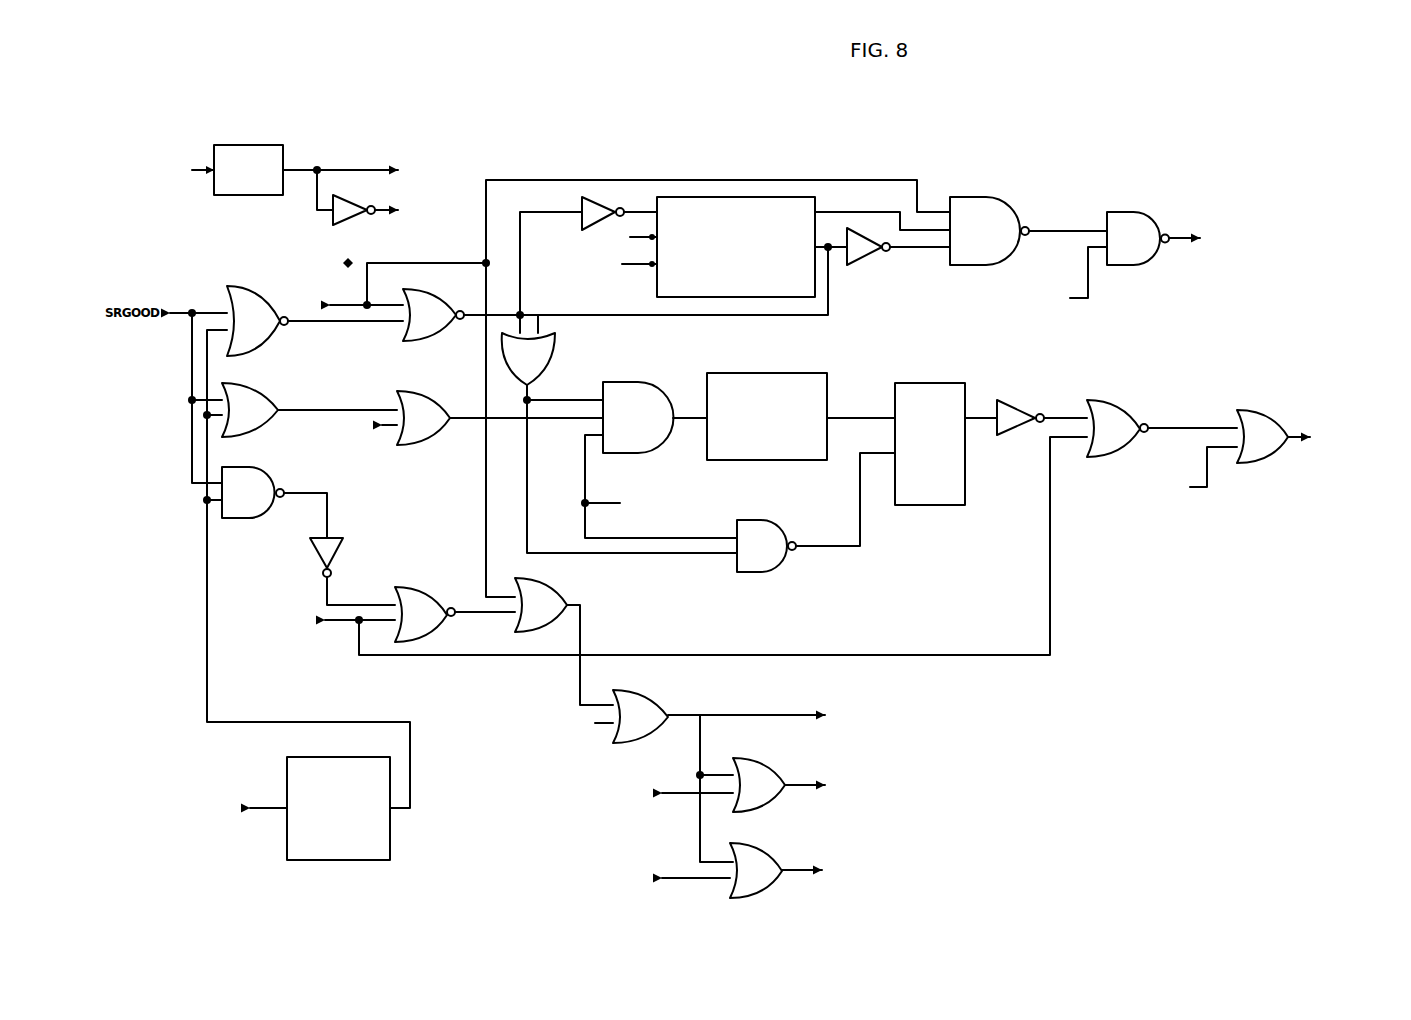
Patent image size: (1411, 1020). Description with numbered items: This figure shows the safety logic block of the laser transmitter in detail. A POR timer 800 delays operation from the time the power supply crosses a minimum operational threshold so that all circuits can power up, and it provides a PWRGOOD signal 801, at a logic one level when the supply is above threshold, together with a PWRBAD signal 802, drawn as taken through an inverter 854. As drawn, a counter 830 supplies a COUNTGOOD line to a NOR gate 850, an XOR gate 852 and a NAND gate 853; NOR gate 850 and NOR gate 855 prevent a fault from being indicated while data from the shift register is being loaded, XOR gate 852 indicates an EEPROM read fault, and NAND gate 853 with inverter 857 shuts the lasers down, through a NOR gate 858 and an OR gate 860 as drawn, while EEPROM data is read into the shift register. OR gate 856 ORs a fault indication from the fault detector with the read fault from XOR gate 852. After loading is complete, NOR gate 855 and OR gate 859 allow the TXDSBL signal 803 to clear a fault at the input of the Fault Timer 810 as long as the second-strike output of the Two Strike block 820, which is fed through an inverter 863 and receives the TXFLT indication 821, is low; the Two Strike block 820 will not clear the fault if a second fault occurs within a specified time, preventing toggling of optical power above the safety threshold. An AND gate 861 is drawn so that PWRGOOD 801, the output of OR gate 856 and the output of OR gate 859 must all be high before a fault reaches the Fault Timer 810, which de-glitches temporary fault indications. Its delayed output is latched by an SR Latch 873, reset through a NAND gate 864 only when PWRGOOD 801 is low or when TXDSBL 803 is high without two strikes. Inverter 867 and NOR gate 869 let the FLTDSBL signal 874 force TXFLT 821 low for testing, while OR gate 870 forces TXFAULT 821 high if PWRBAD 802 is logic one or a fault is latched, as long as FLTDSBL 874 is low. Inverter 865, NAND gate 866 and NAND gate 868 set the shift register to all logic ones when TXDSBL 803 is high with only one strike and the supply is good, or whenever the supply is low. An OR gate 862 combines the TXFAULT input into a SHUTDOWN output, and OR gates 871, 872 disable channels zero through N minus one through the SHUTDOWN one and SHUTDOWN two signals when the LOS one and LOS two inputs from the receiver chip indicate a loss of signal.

The POR timer 800 is at (221, 157).
The PWRGOOD signal 801 is at (384, 157).
The PWRBAD signal 802 is at (422, 199).
The TXDSBL signal 803 is at (617, 388).
The Fault Timer 810 is at (747, 373).
The Two Strike block 820 is at (745, 197).
The TXFLT signal 821 is at (659, 264).
The counter 830 is at (347, 810).
The NOR gate 850 is at (295, 306).
The XOR gate 852 is at (258, 387).
The NAND gate 853 is at (262, 467).
The inverter 854 is at (355, 225).
The NOR gate 855 is at (440, 342).
The OR gate 856 is at (428, 445).
The inverter 857 is at (343, 538).
The NOR gate 858 is at (412, 587).
The OR gate 859 is at (558, 352).
The OR gate 860 is at (565, 580).
The AND gate 861 is at (632, 382).
The OR gate 862 is at (648, 697).
The inverter 863 is at (600, 195).
The NAND gate 864 is at (770, 572).
The inverter 865 is at (852, 265).
The NAND gate 866 is at (985, 197).
The inverter 867 is at (1012, 400).
The NAND gate 868 is at (1145, 265).
The NOR gate 869 is at (1105, 400).
The OR gate 870 is at (1258, 463).
The OR gate 871 is at (758, 758).
The OR gate 872 is at (755, 843).
The SR Latch 873 is at (940, 505).
The FLTDSBL signal 874 is at (668, 551).